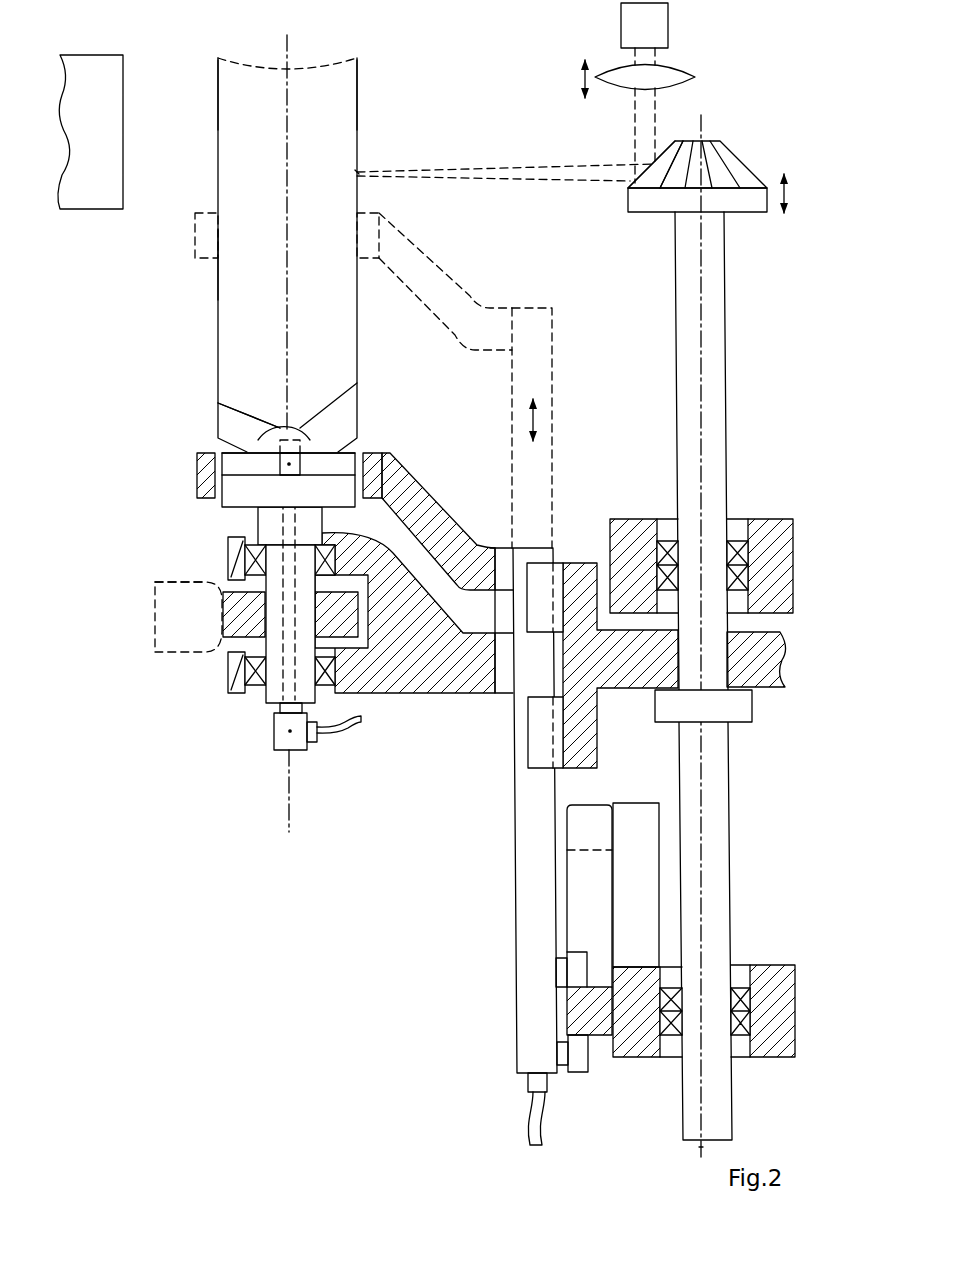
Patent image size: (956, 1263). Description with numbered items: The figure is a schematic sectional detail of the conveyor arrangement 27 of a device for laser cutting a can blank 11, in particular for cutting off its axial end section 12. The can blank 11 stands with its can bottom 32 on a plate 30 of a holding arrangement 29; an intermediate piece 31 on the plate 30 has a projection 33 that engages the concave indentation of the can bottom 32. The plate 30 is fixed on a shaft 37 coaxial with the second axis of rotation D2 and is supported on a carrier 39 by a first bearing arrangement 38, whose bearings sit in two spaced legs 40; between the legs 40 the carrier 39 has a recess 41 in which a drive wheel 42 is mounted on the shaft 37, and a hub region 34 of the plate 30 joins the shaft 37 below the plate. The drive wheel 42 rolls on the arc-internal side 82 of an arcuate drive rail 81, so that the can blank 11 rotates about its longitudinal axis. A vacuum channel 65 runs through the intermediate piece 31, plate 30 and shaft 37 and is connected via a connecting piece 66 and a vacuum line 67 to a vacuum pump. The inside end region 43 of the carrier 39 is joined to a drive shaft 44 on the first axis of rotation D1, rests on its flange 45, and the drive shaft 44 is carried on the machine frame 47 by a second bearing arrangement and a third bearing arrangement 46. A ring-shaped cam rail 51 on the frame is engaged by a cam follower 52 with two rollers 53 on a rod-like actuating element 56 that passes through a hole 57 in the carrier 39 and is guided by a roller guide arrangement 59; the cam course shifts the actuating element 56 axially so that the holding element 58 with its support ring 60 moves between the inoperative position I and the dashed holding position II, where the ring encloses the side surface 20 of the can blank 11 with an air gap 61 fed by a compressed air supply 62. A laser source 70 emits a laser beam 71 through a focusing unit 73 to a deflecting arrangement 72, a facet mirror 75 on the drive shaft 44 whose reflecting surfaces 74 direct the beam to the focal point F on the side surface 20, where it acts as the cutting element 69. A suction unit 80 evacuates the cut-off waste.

The can blank 11 is at (228, 340).
The axial end section 12 is at (342, 95).
The side surface 20 is at (228, 258).
The conveyor arrangement 27 is at (158, 867).
The holding arrangement 29 is at (152, 475).
The plate 30 is at (226, 507).
The intermediate piece 31 is at (340, 460).
The can bottom 32 is at (282, 428).
The projection 33 is at (300, 437).
The hub 34 is at (337, 493).
The shaft 37 is at (275, 677).
The first bearing arrangement 38 is at (340, 557).
The carrier 39 is at (365, 672).
The legs 40 is at (230, 567).
The recess 41 is at (362, 600).
The drive wheel 42 is at (222, 613).
The inside end region 43 is at (767, 660).
The drive shaft 44 is at (720, 832).
The flange 45 is at (737, 708).
The third bearing arrangement 46 is at (737, 520).
The machine frame 47 is at (777, 560).
The cam rail 51 is at (597, 1028).
The cam follower 52 is at (588, 928).
The rollers 53 is at (562, 1047).
The actuating element 56 is at (530, 863).
The hole 57 is at (503, 675).
The holding element 58 is at (388, 458).
The guide arrangement 59 is at (540, 748).
The support ring 60 is at (203, 226).
The air gap 61 is at (360, 228).
The compressed air supply 62 is at (535, 1118).
The vacuum channel 65 is at (285, 687).
The connecting piece 66 is at (285, 738).
The vacuum line 67 is at (342, 725).
The cutting element 69 is at (366, 165).
The laser source 70 is at (660, 30).
The laser beam 71 is at (633, 135).
The deflecting arrangement 72 is at (750, 162).
The focusing unit 73 is at (623, 73).
The reflecting surfaces 74 is at (675, 182).
The facet mirror 75 is at (706, 145).
The suction unit 80 is at (107, 92).
The drive rail 81 is at (155, 592).
The arc-internal side 82 is at (218, 635).
The focal point F is at (357, 170).
The inoperative position I is at (180, 500).
The holding position II is at (183, 242).
The first axis of rotation D1 is at (707, 1148).
The second axis of rotation D2 is at (290, 785).